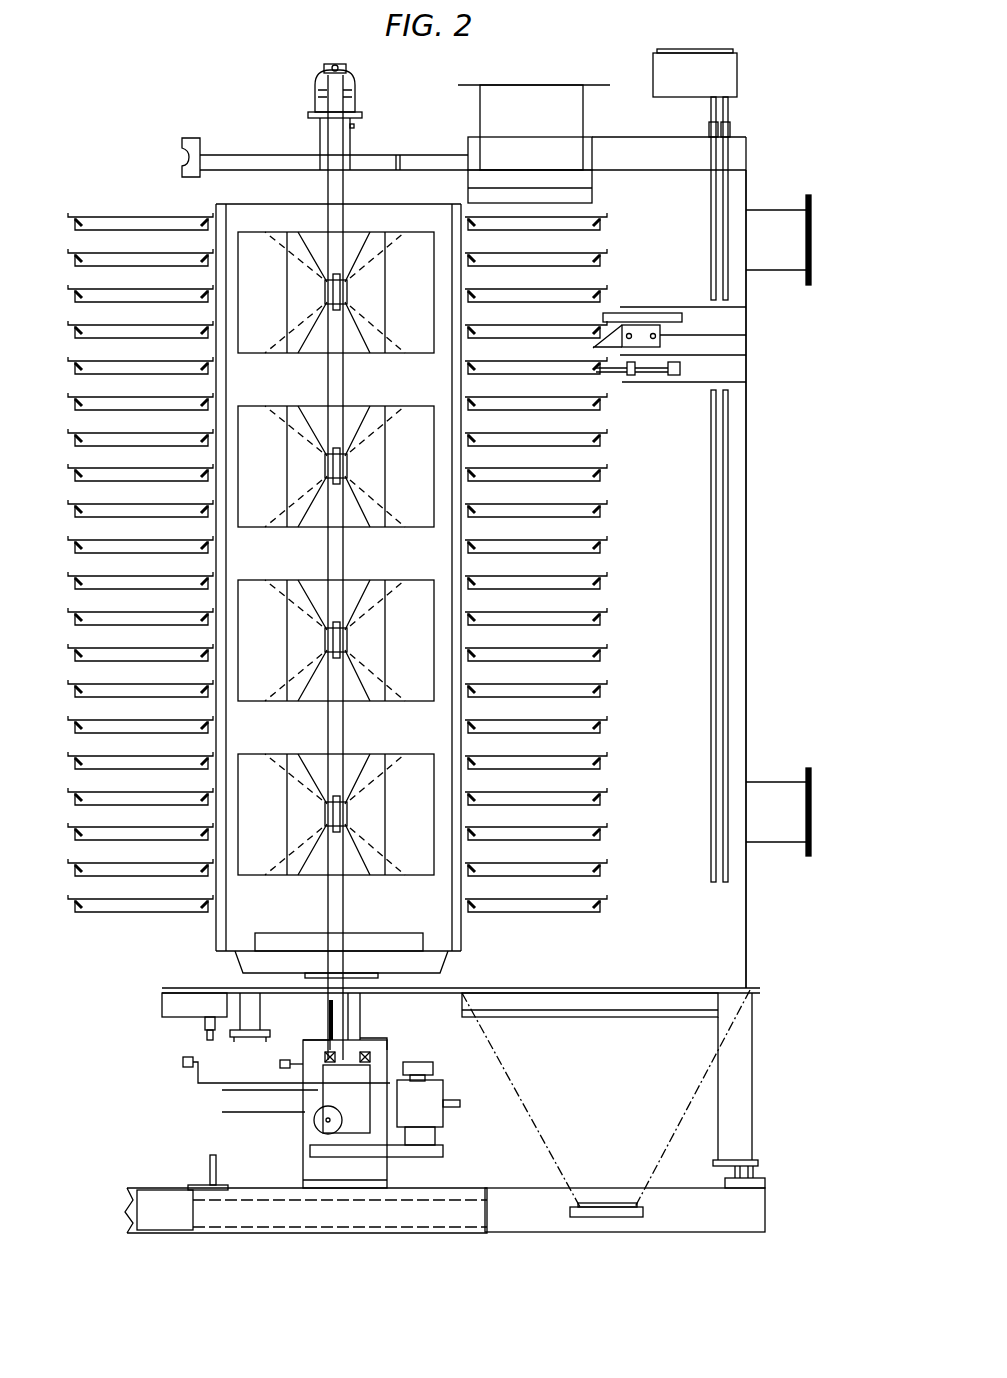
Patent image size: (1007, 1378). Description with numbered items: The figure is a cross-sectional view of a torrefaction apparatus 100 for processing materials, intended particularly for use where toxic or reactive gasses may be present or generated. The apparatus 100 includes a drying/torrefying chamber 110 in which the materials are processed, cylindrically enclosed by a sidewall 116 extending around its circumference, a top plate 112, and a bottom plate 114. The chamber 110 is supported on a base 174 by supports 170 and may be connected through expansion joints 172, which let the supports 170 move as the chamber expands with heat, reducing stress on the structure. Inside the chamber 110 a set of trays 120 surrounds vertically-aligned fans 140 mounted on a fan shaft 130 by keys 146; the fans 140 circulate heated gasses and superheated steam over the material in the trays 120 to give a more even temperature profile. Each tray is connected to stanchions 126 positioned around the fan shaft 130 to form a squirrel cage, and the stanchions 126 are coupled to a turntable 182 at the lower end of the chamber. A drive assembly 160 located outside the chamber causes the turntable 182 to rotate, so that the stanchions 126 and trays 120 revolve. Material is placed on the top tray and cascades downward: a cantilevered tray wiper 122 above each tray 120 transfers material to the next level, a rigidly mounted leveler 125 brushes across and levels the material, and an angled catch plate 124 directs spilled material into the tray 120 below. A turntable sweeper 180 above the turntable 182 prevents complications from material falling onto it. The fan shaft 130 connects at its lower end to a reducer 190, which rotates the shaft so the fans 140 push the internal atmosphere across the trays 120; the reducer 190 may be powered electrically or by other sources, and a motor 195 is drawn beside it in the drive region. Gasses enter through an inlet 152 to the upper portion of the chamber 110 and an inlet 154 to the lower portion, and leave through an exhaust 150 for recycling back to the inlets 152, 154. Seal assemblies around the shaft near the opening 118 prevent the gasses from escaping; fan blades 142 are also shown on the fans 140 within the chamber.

The apparatus 100 is at (158, 78).
The chamber 110 is at (680, 618).
The top plate 112 is at (632, 165).
The bottom plate 114 is at (630, 995).
The sidewall 116 is at (748, 594).
The opening 118 is at (330, 1006).
The trays 120 is at (608, 220).
The tray wiper 122 is at (612, 312).
The catch plate 124 is at (606, 330).
The leveler 125 is at (600, 375).
The stanchion 126 is at (452, 392).
The fan shaft 130 is at (332, 918).
The fans 140 is at (258, 412).
The fan blades 142 is at (330, 450).
The keys 146 is at (348, 292).
The exhaust 150 is at (548, 85).
The inlet 152 is at (808, 248).
The inlet 154 is at (810, 818).
The drive assembly 160 is at (163, 1069).
The supports 170 is at (754, 1062).
The expansion joints 172 is at (760, 1165).
The base 174 is at (768, 1210).
The turntable sweeper 180 is at (262, 940).
The turntable 182 is at (245, 963).
The reducer 190 is at (320, 1118).
The motor 195 is at (432, 1105).